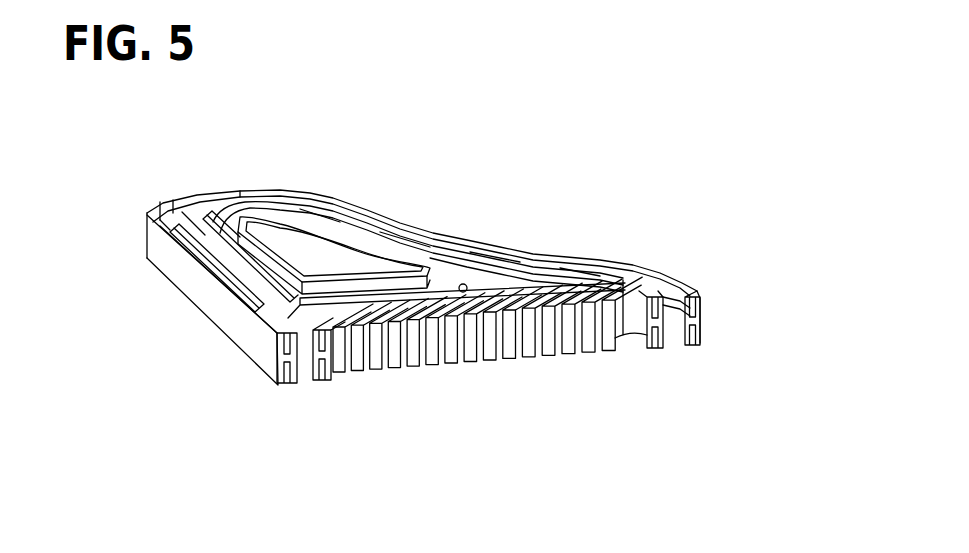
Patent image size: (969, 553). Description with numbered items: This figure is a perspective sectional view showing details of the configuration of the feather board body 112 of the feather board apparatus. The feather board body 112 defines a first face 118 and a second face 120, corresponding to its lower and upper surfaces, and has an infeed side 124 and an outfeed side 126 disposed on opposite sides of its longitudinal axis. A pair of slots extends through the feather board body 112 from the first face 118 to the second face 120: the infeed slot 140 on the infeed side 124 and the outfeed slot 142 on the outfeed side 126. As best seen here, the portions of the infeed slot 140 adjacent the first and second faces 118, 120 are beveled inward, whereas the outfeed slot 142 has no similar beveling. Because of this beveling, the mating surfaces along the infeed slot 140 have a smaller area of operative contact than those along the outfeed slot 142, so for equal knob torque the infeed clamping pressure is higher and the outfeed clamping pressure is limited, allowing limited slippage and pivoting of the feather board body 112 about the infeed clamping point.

The feather board body 112 is at (315, 195).
The first face 118 is at (700, 345).
The second face 120 is at (615, 245).
The infeed side 124 is at (208, 352).
The outfeed side 126 is at (697, 269).
The infeed slot 140 is at (190, 222).
The outfeed slot 142 is at (505, 245).